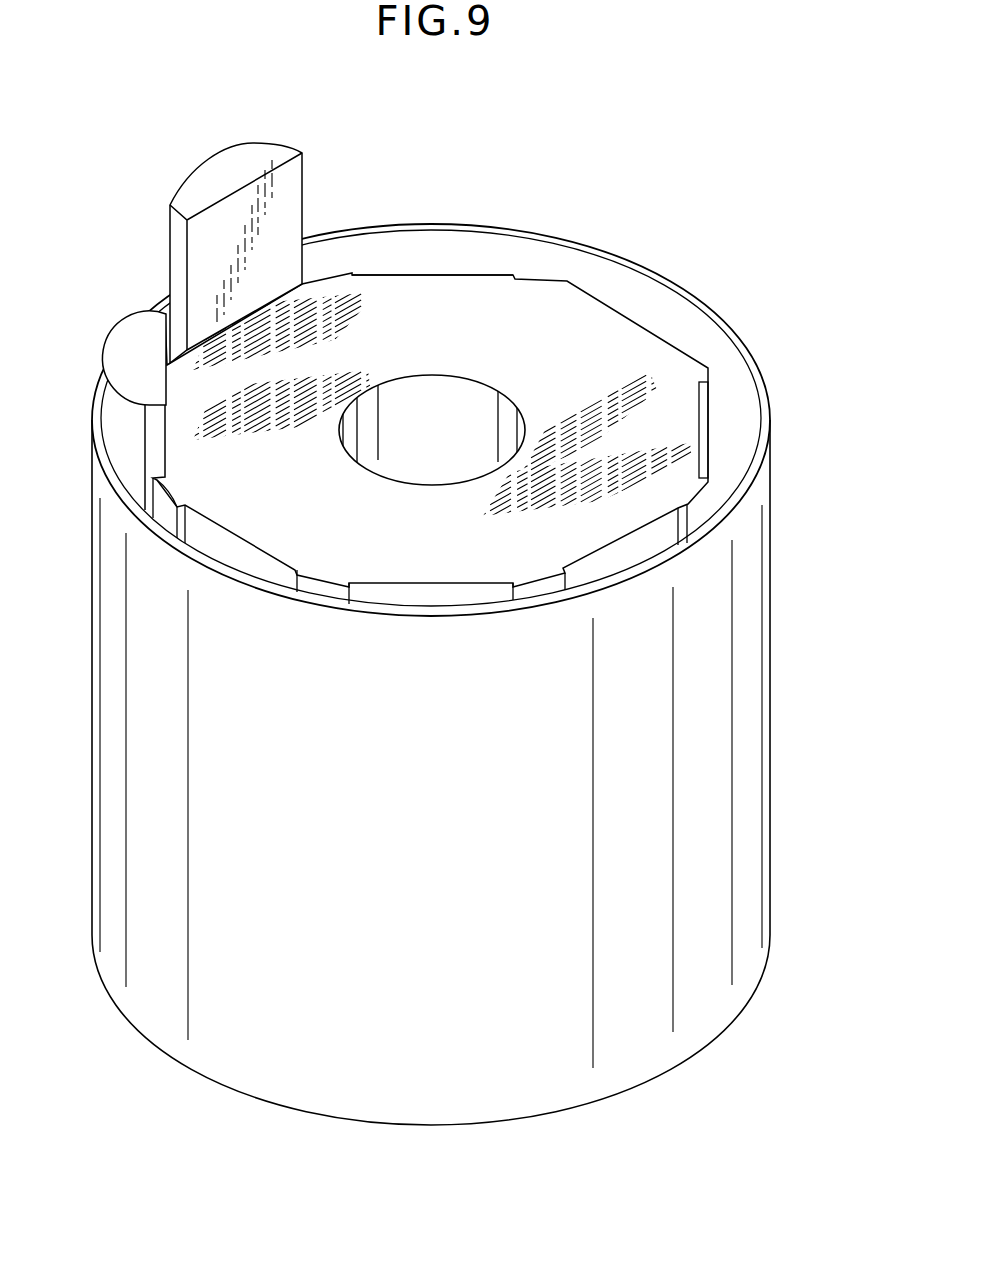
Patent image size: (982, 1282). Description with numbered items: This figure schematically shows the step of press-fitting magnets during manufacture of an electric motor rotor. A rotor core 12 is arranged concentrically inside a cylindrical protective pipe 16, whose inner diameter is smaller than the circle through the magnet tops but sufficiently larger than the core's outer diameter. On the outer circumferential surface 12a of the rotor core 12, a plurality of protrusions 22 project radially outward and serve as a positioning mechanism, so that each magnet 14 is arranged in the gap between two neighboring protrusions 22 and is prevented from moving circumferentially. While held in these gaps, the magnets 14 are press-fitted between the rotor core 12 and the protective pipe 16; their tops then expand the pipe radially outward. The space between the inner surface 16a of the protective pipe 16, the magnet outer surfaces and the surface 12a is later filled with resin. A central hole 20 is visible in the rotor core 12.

The rotor core 12 is at (400, 320).
The outer circumferential surface of the rotor core 12a is at (476, 273).
The magnet 14 is at (240, 150).
The protective pipe 16 is at (775, 765).
The inner surface of the protective pipe 16a is at (752, 424).
The center hole 20 is at (483, 383).
The protrusion 22 is at (535, 273).